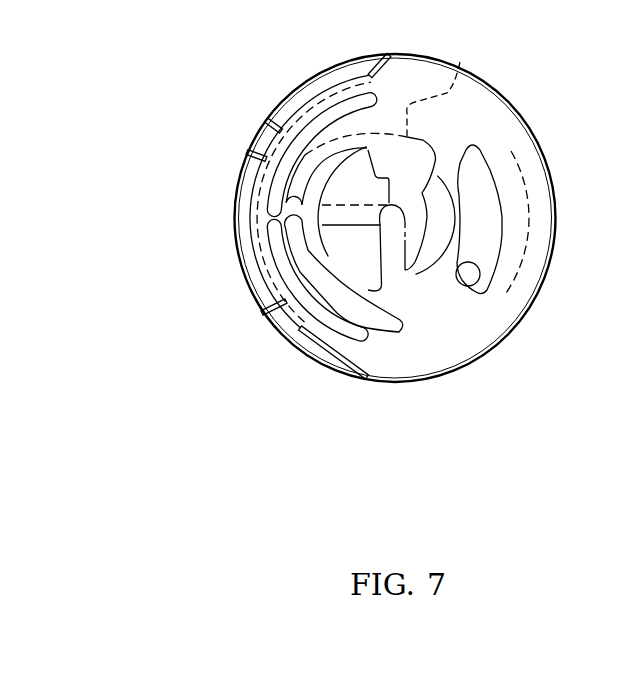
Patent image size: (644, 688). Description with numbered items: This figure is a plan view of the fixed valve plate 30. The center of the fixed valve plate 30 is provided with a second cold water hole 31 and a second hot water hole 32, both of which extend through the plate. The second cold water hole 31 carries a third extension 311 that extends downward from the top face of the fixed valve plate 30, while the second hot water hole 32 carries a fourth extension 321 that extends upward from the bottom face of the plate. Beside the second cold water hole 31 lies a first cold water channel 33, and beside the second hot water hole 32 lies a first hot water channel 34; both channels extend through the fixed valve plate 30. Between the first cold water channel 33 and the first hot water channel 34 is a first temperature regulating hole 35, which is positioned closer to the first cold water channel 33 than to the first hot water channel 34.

The fixed valve plate 30 is at (481, 366).
The second cold water hole 31 is at (367, 281).
The second hot water hole 32 is at (478, 282).
The fourth extension 321 is at (442, 87).
The first cold water channel 33 is at (270, 255).
The first hot water channel 34 is at (490, 190).
The first temperature regulating hole 35 is at (340, 130).
The third extension 311 is at (335, 214).